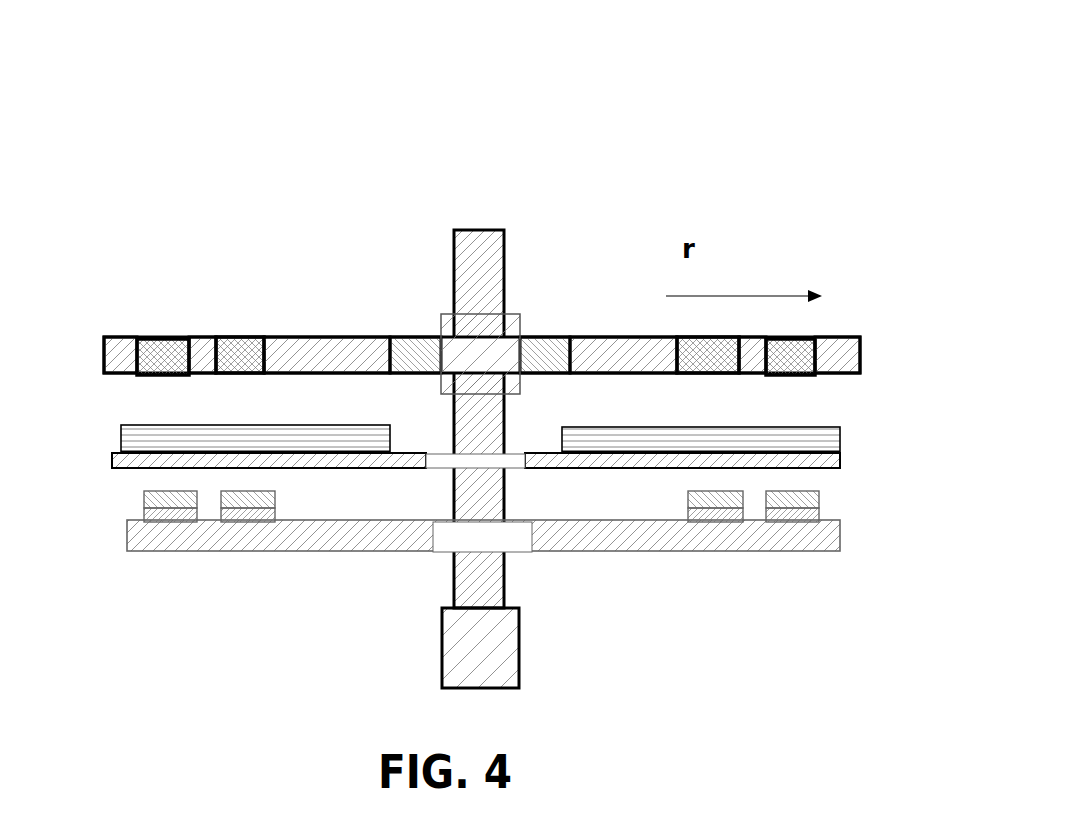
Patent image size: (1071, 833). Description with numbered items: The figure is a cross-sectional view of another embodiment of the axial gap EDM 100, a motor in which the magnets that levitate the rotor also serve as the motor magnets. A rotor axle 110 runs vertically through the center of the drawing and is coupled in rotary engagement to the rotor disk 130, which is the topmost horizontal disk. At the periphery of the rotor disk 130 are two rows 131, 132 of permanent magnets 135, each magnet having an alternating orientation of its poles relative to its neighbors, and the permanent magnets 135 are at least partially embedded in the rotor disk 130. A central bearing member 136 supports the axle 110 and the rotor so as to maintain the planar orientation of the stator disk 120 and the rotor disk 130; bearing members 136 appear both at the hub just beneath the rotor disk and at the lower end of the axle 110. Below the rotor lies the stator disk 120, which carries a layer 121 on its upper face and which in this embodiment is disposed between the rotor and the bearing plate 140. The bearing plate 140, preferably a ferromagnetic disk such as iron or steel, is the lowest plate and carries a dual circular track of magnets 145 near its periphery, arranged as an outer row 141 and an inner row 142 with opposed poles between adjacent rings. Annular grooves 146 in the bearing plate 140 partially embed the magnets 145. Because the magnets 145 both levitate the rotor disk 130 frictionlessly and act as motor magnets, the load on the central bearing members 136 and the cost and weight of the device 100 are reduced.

The axial gap EDM 100 is at (350, 155).
The rotor axle 110 is at (480, 230).
The stator disk 120 is at (848, 447).
The layer 121 is at (280, 445).
The rotor disk 130 is at (115, 314).
The row of permanent magnets 131 is at (232, 337).
The row of permanent magnets 132 is at (163, 337).
The permanent magnets 135 is at (264, 337).
The central bearing member 136 is at (480, 314).
The bearing plate 140 is at (350, 575).
The outer row of magnets 141 is at (243, 533).
The inner row of magnets 142 is at (172, 533).
The magnets 145 is at (712, 552).
The annular grooves 146 is at (787, 542).